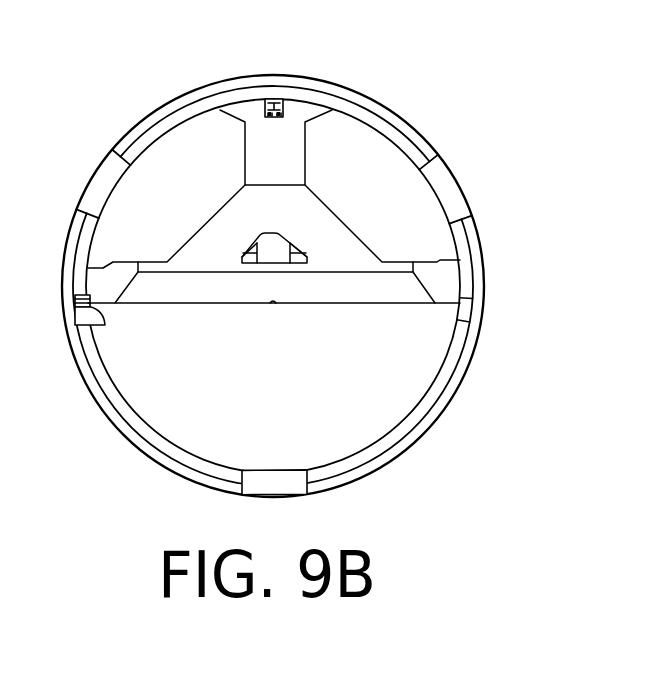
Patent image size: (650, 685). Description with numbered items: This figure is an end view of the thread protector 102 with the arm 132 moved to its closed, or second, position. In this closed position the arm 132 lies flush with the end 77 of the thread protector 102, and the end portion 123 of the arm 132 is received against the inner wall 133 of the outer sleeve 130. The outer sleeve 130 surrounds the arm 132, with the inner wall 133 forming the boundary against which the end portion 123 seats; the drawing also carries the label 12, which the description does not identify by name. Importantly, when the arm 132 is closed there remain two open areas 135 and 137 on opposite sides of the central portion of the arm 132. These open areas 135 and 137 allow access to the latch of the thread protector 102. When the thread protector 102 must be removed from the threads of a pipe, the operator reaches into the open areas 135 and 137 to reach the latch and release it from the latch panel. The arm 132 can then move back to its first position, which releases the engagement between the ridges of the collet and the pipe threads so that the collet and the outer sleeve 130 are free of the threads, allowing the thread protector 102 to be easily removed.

The thread protector 102 is at (292, 260).
The mounting bracket 12 is at (313, 212).
The end 77 is at (428, 138).
The end portion 123 is at (245, 100).
The outer sleeve 130 is at (466, 376).
The arm 132 is at (185, 224).
The inner wall 133 is at (375, 128).
The open area 135 is at (178, 138).
The open area 137 is at (441, 188).